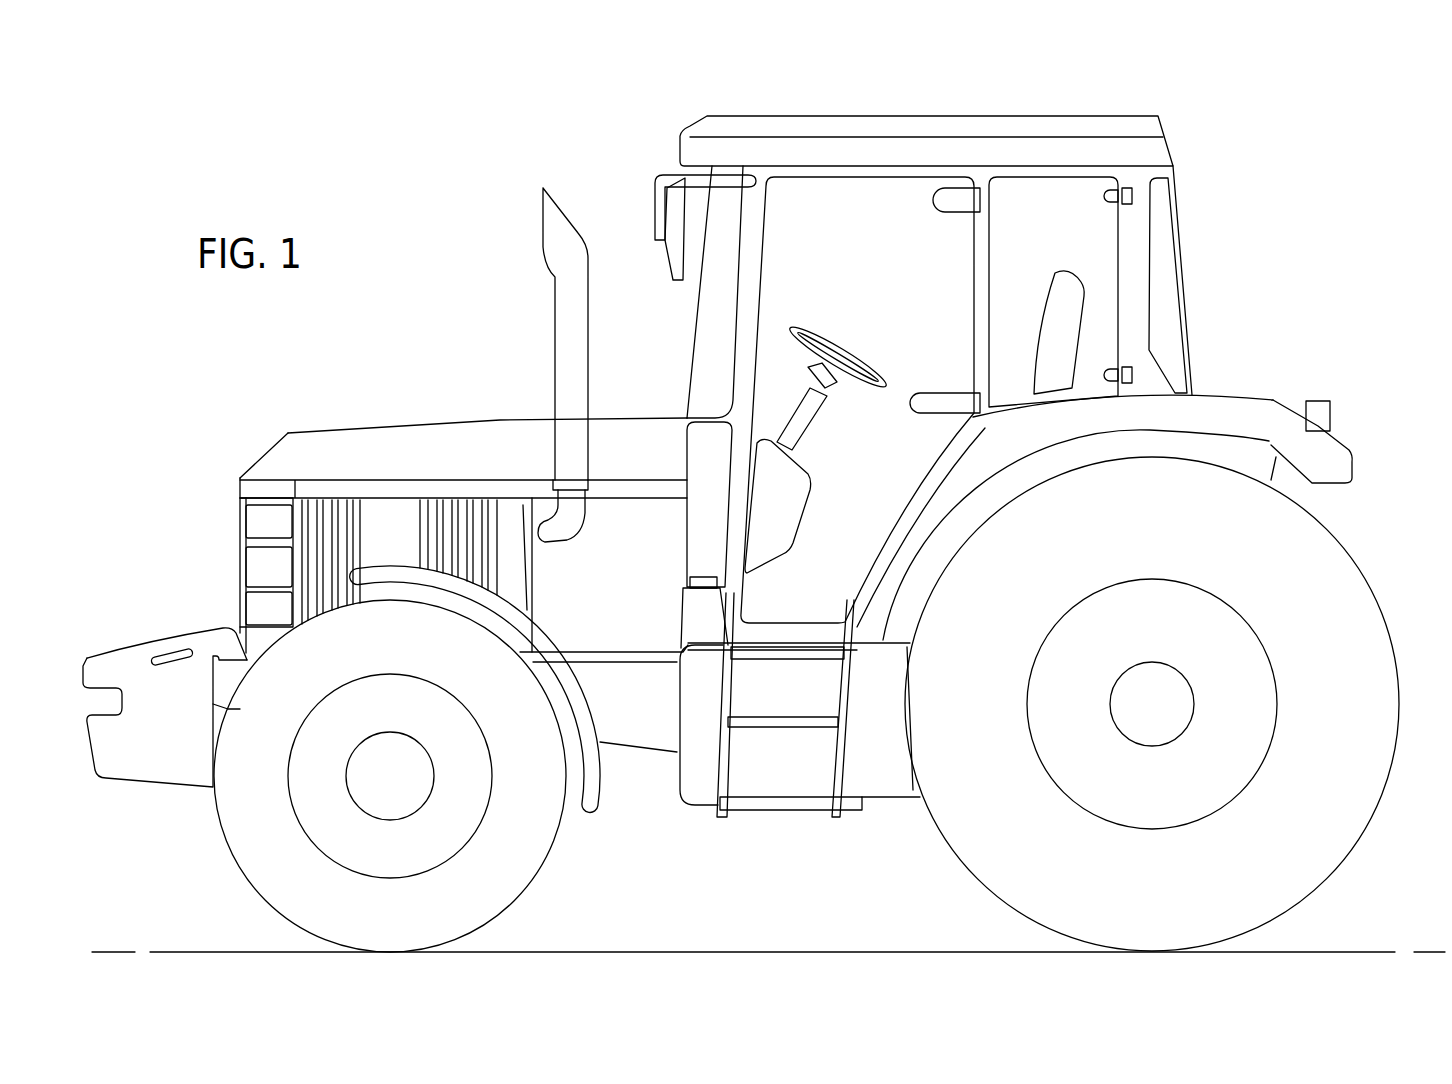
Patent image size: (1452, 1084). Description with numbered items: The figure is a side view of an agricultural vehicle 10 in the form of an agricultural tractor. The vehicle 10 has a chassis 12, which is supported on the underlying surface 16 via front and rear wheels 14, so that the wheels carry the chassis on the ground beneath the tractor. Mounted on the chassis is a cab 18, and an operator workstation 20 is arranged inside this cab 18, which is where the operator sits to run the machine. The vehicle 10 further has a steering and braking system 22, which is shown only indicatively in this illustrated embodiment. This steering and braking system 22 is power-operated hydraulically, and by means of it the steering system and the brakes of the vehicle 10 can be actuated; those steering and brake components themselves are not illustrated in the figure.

The agricultural vehicle 10 is at (1258, 107).
The chassis 12 is at (870, 743).
The front and rear wheels 14 is at (1353, 551).
The underlying surface 16 is at (1358, 952).
The cab 18 is at (858, 228).
The operator workstation 20 is at (1075, 115).
The steering and braking system 22 is at (1063, 272).